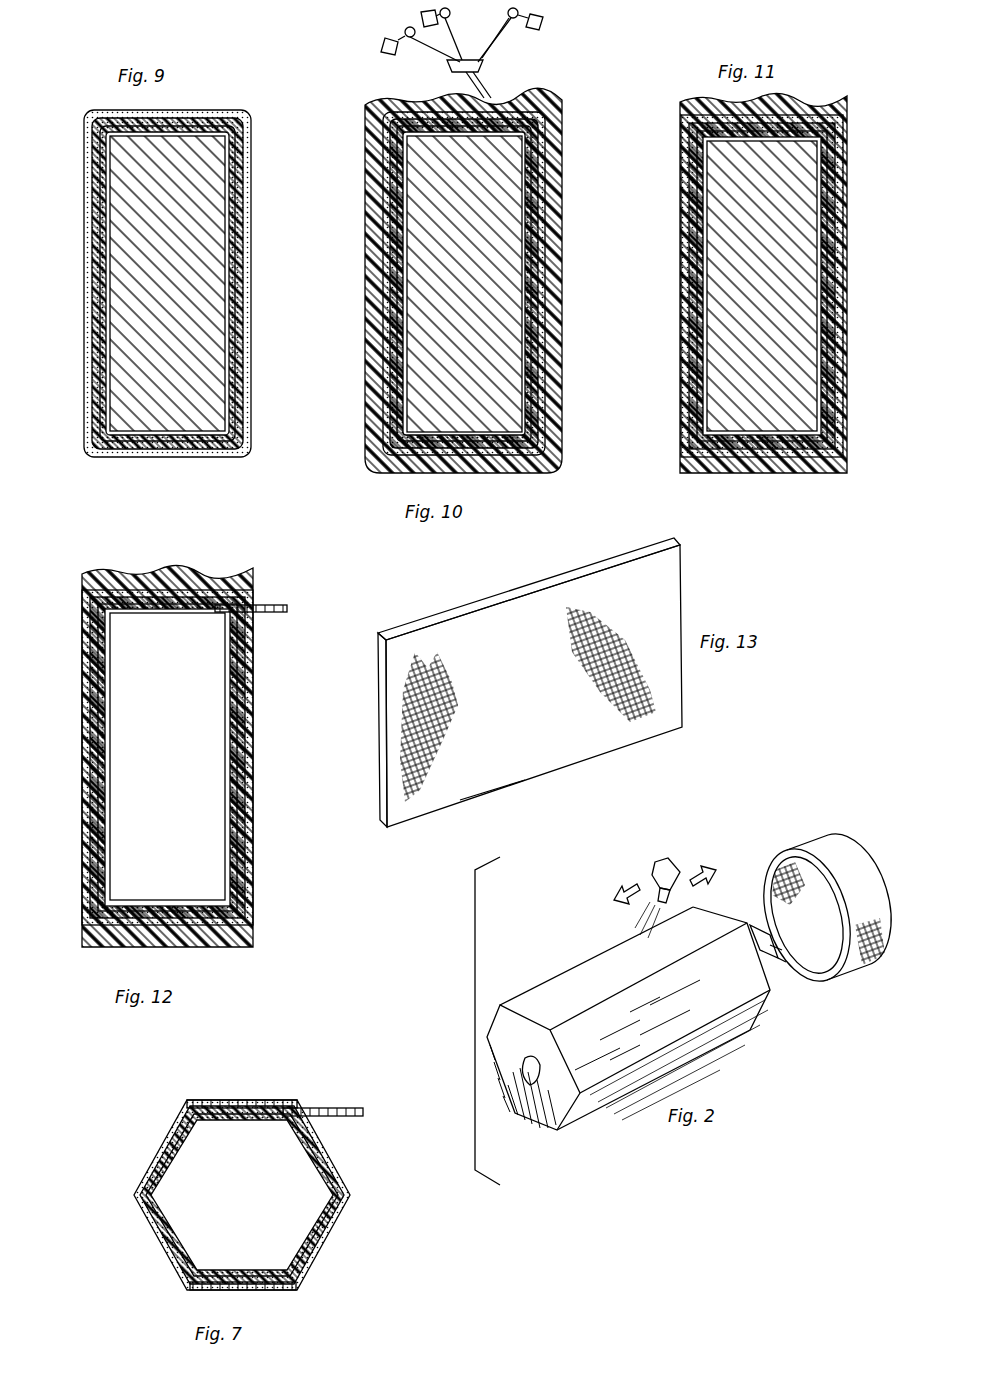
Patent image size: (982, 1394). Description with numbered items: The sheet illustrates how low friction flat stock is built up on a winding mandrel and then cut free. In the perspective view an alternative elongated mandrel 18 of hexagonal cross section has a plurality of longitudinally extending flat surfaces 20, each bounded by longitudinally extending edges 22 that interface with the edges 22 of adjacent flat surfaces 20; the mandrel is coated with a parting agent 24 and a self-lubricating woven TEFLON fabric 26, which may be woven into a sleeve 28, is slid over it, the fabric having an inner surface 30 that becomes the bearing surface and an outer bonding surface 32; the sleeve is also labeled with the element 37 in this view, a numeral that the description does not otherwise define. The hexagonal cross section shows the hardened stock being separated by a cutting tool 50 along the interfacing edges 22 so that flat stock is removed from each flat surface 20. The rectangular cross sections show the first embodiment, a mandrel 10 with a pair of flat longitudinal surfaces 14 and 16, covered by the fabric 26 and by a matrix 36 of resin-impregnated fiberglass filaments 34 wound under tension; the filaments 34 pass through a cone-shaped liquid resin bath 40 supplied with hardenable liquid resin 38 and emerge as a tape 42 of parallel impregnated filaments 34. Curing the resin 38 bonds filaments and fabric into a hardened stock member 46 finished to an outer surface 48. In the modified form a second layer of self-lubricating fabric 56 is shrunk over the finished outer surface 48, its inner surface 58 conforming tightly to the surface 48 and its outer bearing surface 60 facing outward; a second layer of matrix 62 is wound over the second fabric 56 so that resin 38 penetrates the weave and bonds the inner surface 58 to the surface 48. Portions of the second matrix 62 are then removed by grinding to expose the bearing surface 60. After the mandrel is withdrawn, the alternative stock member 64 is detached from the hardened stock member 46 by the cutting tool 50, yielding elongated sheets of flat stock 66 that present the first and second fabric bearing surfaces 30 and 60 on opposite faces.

In FIG. 9, the elongated mandrel 10 is at (203, 143).
In FIG. 10, the elongated mandrel 10 is at (510, 173).
In FIG. 11, the elongated mandrel 10 is at (807, 157).
In FIG. 9, the flat longitudinal surface 14 is at (88, 193).
In FIG. 10, the flat longitudinal surface 14 is at (380, 182).
In FIG. 11, the flat longitudinal surface 14 is at (703, 277).
In FIG. 9, the flat longitudinal surface 16 is at (227, 230).
In FIG. 10, the flat longitudinal surface 16 is at (543, 247).
In FIG. 11, the flat longitudinal surface 16 is at (830, 247).
In FIG. 2, the elongated mandrel 18 is at (548, 973).
In FIG. 2, the flat surface 20 is at (594, 1120).
In FIG. 2, the longitudinally extending edge 22 is at (722, 928).
In FIG. 2, the parting agent 24 is at (668, 860).
In FIG. 9, the woven TEFLON fabric 26 is at (107, 317).
In FIG. 10, the woven TEFLON fabric 26 is at (400, 285).
In FIG. 11, the woven TEFLON fabric 26 is at (705, 325).
In FIG. 12, the woven TEFLON fabric 26 is at (100, 820).
In FIG. 13, the woven TEFLON fabric 26 is at (378, 683).
In FIG. 7, the woven TEFLON fabric 26 is at (180, 1270).
In FIG. 2, the woven TEFLON fabric 26 is at (820, 985).
In FIG. 2, the sleeve 28 is at (850, 980).
In FIG. 9, the inner surface 30 is at (120, 245).
In FIG. 10, the inner surface 30 is at (420, 210).
In FIG. 11, the inner surface 30 is at (713, 205).
In FIG. 12, the inner surface 30 is at (120, 695).
In FIG. 13, the inner surface 30 is at (378, 722).
In FIG. 7, the inner surface 30 is at (165, 1206).
In FIG. 2, the inner surface 30 is at (790, 853).
In FIG. 9, the bonding surface 32 is at (100, 278).
In FIG. 10, the bonding surface 32 is at (400, 250).
In FIG. 11, the bonding surface 32 is at (703, 232).
In FIG. 12, the bonding surface 32 is at (100, 732).
In FIG. 7, the bonding surface 32 is at (165, 1233).
In FIG. 10, the fiberglass filaments 34 is at (450, 37).
In FIG. 9, the matrix 36 is at (120, 130).
In FIG. 10, the matrix 36 is at (397, 127).
In FIG. 11, the matrix 36 is at (707, 132).
In FIG. 12, the matrix 36 is at (90, 628).
In FIG. 13, the matrix 36 is at (463, 602).
In FIG. 7, the matrix 36 is at (175, 1120).
In FIG. 2, the cylindrical ring 37 is at (832, 828).
In FIG. 10, the hardenable liquid resin 38 is at (473, 50).
In FIG. 10, the liquid resin bath 40 is at (447, 62).
In FIG. 10, the tape 42 is at (480, 83).
In FIG. 9, the hardened stock member 46 is at (243, 118).
In FIG. 10, the hardened stock member 46 is at (532, 110).
In FIG. 11, the hardened stock member 46 is at (843, 120).
In FIG. 12, the hardened stock member 46 is at (240, 657).
In FIG. 7, the hardened stock member 46 is at (320, 1248).
In FIG. 9, the finished outer surface 48 is at (247, 348).
In FIG. 10, the finished outer surface 48 is at (545, 302).
In FIG. 11, the finished outer surface 48 is at (833, 340).
In FIG. 12, the finished outer surface 48 is at (250, 740).
In FIG. 7, the finished outer surface 48 is at (345, 1202).
In FIG. 12, the cutting tool 50 is at (282, 606).
In FIG. 7, the cutting tool 50 is at (350, 1108).
In FIG. 9, the second layer of self-lubricating fabric 56 is at (92, 375).
In FIG. 10, the second layer of self-lubricating fabric 56 is at (385, 315).
In FIG. 11, the second layer of self-lubricating fabric 56 is at (690, 343).
In FIG. 12, the second layer of self-lubricating fabric 56 is at (83, 865).
In FIG. 13, the second layer of self-lubricating fabric 56 is at (392, 648).
In FIG. 9, the inner surface 58 is at (120, 443).
In FIG. 10, the inner surface 58 is at (395, 345).
In FIG. 11, the inner surface 58 is at (703, 410).
In FIG. 12, the inner surface 58 is at (217, 802).
In FIG. 9, the bearing surface 60 is at (160, 457).
In FIG. 10, the bearing surface 60 is at (390, 410).
In FIG. 11, the bearing surface 60 is at (700, 462).
In FIG. 12, the bearing surface 60 is at (253, 862).
In FIG. 13, the bearing surface 60 is at (392, 772).
In FIG. 10, the second layer of matrix 62 is at (375, 455).
In FIG. 11, the second layer of matrix 62 is at (790, 465).
In FIG. 12, the second layer of matrix 62 is at (90, 577).
In FIG. 10, the alternative stock member 64 is at (560, 440).
In FIG. 11, the alternative stock member 64 is at (840, 475).
In FIG. 12, the alternative stock member 64 is at (247, 583).
In FIG. 13, the flat stock 66 is at (567, 563).